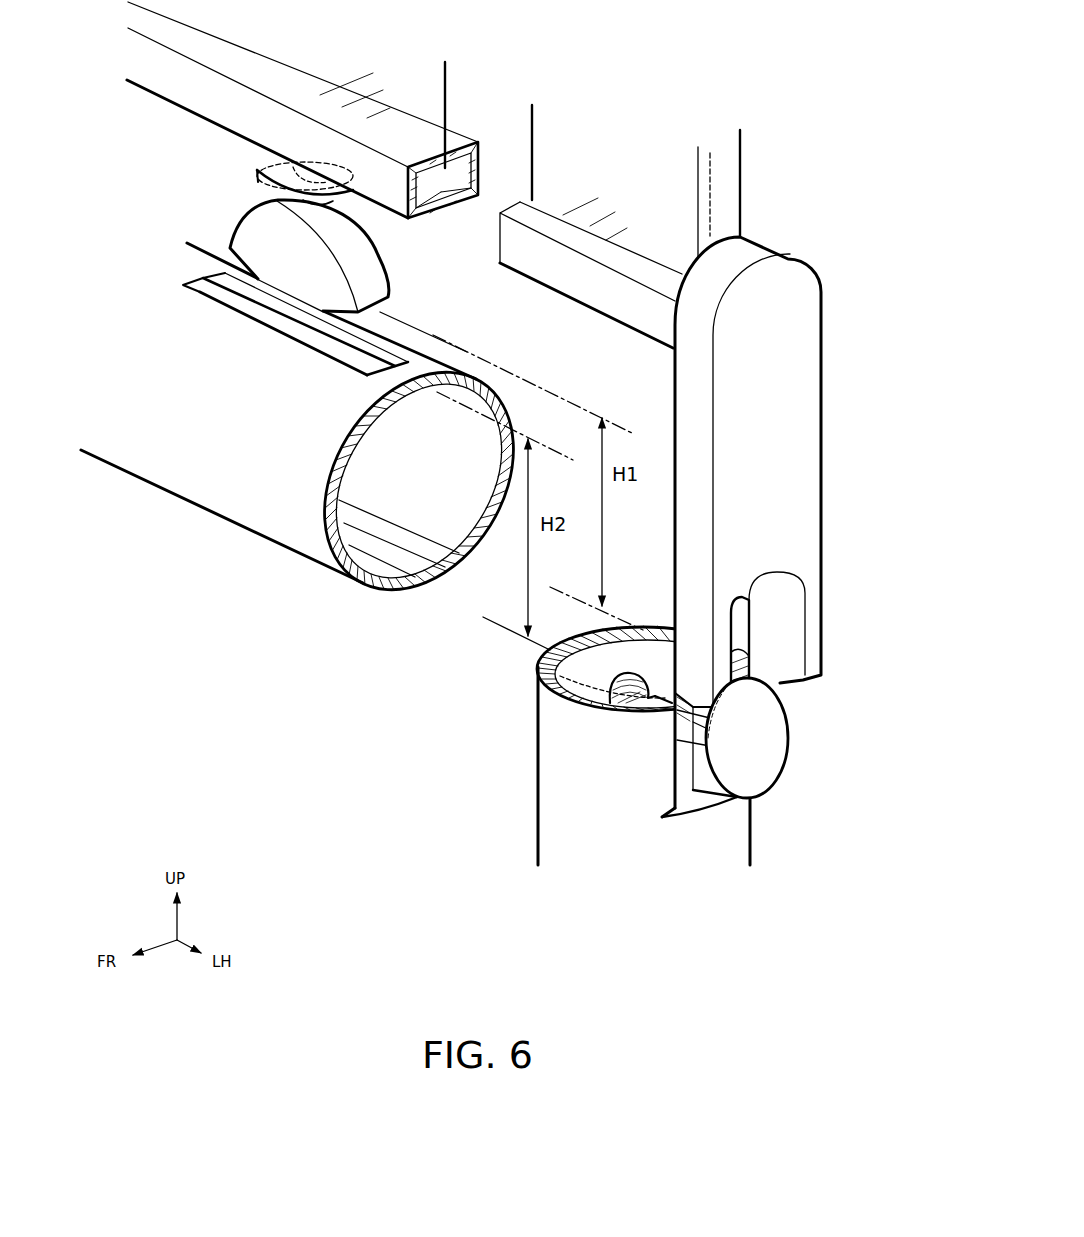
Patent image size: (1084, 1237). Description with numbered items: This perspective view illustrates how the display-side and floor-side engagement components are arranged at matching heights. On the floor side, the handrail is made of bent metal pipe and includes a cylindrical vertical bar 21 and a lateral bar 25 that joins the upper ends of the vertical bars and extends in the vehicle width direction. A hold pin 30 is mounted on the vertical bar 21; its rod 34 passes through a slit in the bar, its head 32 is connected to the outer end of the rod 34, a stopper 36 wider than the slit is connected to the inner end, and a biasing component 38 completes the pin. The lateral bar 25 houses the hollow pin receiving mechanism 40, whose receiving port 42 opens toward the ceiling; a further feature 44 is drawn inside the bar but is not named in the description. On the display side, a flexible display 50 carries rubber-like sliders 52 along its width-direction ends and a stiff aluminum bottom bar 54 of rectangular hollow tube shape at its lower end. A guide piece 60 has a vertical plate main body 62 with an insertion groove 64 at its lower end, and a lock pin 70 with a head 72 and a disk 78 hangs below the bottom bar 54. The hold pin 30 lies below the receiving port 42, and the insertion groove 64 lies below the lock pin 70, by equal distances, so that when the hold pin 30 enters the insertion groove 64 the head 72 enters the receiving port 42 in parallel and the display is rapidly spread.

The vertical bar 21 is at (607, 745).
The lateral bar 25 is at (316, 450).
The hold pin 30 is at (697, 772).
The head 32 is at (768, 755).
The rod 34 is at (673, 728).
The stopper 36 is at (550, 693).
The biasing component 38 is at (657, 687).
The pin receiving mechanism 40 is at (316, 434).
The receiving port 42 is at (203, 282).
The inner surface 44 is at (462, 503).
The flexible display 50 is at (432, 77).
The slider 52 is at (720, 217).
The bottom bar 54 is at (160, 72).
The guide piece 60 is at (795, 522).
The main body 62 is at (797, 473).
The insertion groove 64 is at (782, 618).
The lock pin 70 is at (270, 230).
The head 72 is at (370, 270).
The disk 78 is at (268, 170).